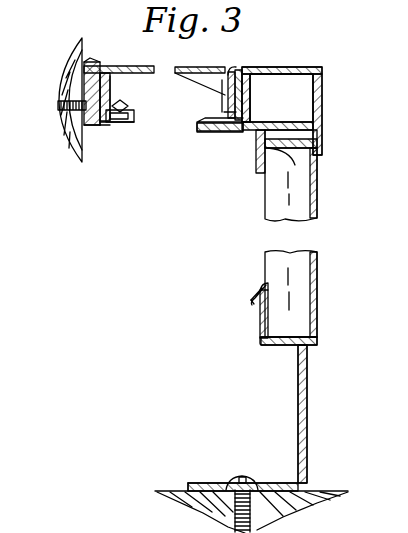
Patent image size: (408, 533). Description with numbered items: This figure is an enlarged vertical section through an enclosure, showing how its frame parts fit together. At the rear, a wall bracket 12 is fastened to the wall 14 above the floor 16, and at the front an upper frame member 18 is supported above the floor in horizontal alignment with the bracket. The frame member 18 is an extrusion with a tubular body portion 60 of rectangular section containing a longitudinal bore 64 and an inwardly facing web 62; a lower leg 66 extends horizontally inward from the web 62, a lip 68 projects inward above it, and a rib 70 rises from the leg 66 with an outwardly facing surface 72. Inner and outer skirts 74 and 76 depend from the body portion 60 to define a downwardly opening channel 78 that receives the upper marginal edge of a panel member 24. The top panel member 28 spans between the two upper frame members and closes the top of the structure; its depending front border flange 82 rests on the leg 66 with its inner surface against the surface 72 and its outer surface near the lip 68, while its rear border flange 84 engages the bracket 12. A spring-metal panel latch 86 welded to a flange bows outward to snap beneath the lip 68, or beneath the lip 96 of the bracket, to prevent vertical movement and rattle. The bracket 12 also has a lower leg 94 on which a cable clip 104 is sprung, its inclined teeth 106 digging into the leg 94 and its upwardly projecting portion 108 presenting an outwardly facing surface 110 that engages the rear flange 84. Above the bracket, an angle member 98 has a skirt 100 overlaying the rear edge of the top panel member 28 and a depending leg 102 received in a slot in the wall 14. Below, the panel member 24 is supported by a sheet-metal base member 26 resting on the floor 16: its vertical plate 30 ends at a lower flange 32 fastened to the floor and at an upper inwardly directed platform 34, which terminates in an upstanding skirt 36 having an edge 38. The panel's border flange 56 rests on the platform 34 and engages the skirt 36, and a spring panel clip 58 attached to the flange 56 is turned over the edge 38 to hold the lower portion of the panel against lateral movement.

The wall bracket 12 is at (81, 163).
The wall 14 is at (82, 42).
The floor 16 is at (172, 490).
The front upper frame member 18 is at (292, 70).
The panel member 24 is at (318, 201).
The base member 26 is at (308, 443).
The top panel member 28 is at (200, 67).
The plate 30 is at (308, 400).
The flange 32 is at (203, 481).
The platform 34 is at (298, 328).
The skirt 36 is at (266, 314).
The edge 38 is at (260, 287).
The border flange 56 is at (298, 270).
The panel clip 58 is at (252, 304).
The tubular body portion 60 is at (314, 67).
The web 62 is at (233, 68).
The bore 64 is at (298, 90).
The lower leg 66 is at (198, 131).
The lip 68 is at (242, 72).
The rib 70 is at (226, 105).
The outwardly facing surface 72 is at (232, 131).
The inner skirt 74 is at (257, 168).
The outer skirt 76 is at (320, 142).
The channel 78 is at (292, 152).
The front border flange 82 is at (223, 98).
The rear border flange 84 is at (124, 66).
The panel latch 86 is at (182, 69).
The lower leg 94 is at (100, 126).
The lip 96 is at (100, 66).
The angle member 98 is at (58, 104).
The skirt 100 is at (117, 70).
The depending leg 102 is at (82, 63).
The cable clip 104 is at (133, 124).
The teeth 106 is at (108, 126).
The upwardly projecting portion 108 is at (130, 116).
The outwardly facing surface 110 is at (104, 128).